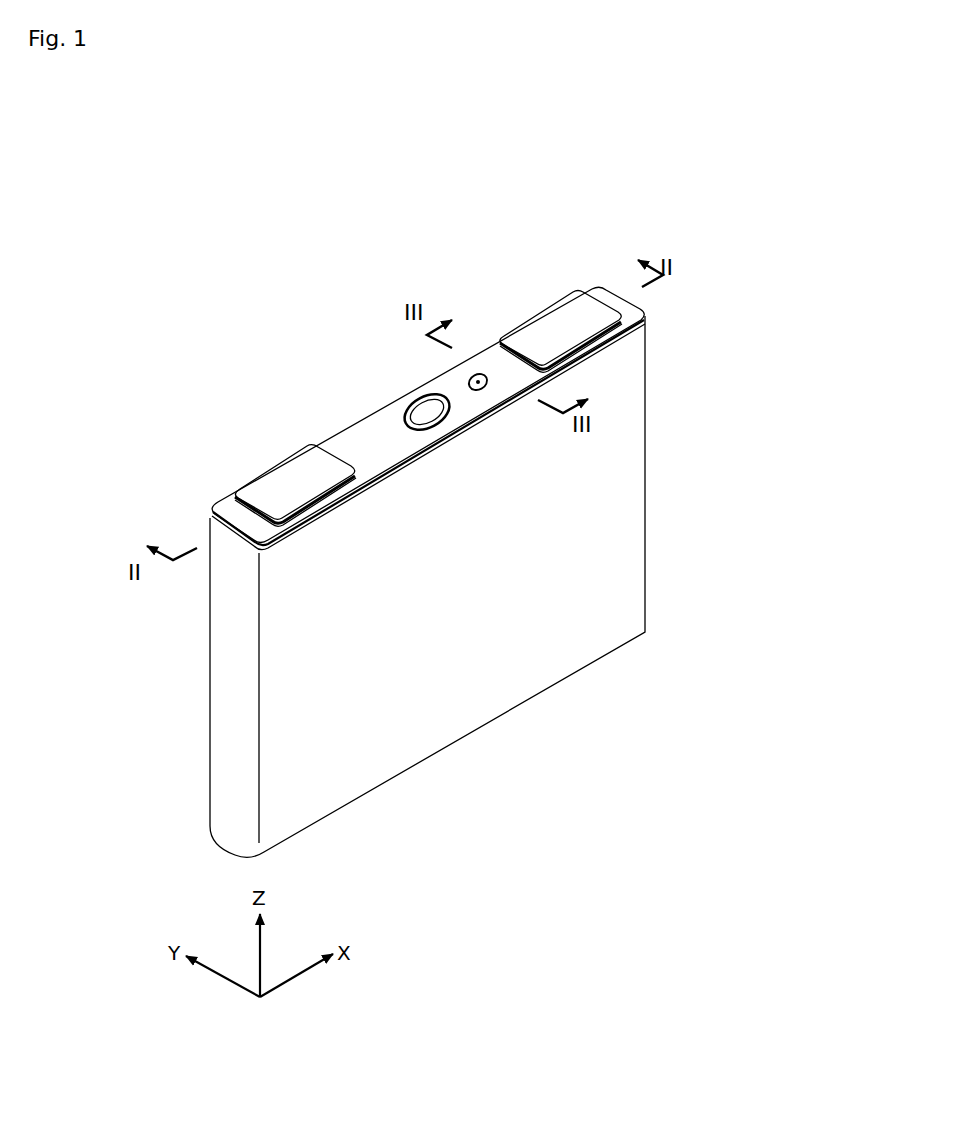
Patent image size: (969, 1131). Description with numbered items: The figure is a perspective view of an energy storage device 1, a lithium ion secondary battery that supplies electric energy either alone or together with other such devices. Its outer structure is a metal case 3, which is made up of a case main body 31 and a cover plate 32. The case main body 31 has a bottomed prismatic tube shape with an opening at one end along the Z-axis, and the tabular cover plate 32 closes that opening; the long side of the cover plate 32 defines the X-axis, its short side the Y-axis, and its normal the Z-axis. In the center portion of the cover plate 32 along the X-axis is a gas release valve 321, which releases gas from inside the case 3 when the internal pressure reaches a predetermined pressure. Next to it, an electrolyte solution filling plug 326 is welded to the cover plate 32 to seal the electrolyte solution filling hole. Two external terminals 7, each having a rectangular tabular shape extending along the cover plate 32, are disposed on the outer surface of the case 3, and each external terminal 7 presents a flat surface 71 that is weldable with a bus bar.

The energy storage device 1 is at (643, 203).
The case 3 is at (752, 369).
The case main body 31 is at (624, 460).
The cover plate 32 is at (634, 312).
The gas release valve 321 is at (410, 400).
The electrolyte solution filling plug 326 is at (470, 377).
The external terminal 7 is at (556, 307).
The surface 71 is at (573, 312).